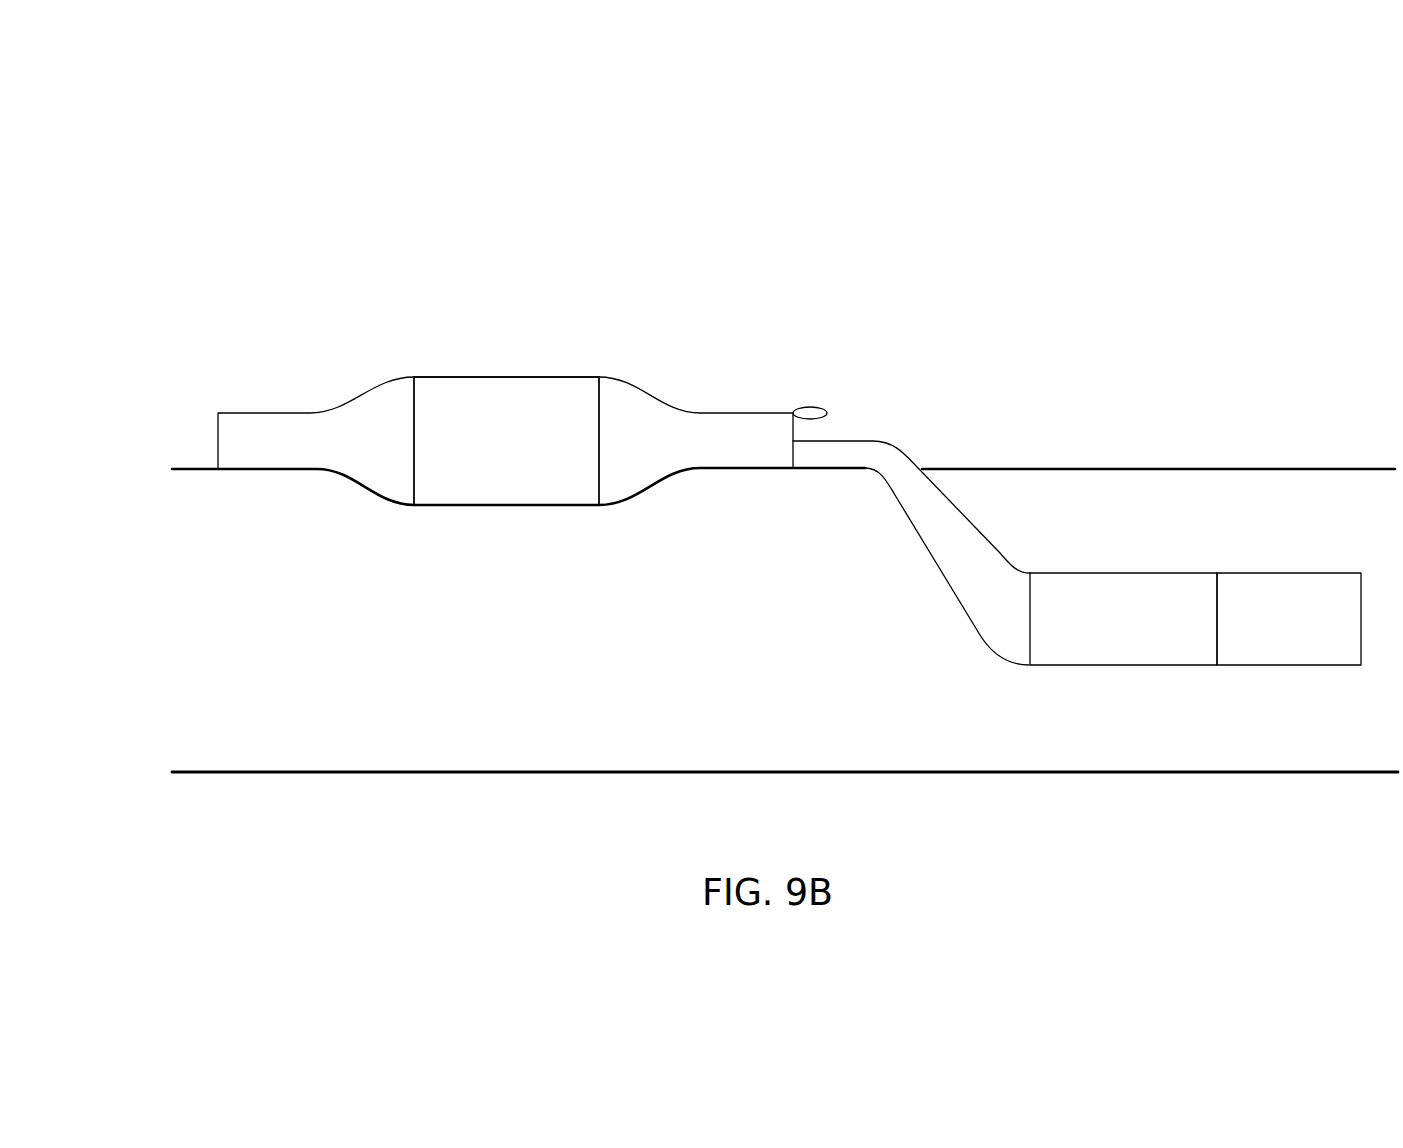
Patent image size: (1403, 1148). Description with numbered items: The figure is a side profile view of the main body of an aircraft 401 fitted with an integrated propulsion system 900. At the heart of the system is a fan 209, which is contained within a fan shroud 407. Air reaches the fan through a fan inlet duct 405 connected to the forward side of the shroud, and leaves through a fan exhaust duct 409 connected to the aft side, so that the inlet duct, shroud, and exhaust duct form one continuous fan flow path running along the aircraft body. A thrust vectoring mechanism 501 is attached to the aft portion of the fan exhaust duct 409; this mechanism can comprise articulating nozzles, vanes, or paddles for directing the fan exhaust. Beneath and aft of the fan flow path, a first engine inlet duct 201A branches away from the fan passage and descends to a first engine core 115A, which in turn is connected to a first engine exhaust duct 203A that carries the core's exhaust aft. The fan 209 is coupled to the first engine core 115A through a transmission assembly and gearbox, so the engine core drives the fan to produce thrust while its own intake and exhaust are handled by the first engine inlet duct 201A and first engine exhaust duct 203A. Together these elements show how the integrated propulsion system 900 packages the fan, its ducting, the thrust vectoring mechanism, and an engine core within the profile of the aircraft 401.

The integrated propulsion system 900 is at (333, 155).
The fan inlet duct 405 is at (310, 412).
The fan shroud 407 is at (503, 376).
The fan 209 is at (506, 441).
The fan exhaust duct 409 is at (733, 412).
The thrust vectoring mechanism 501 is at (810, 407).
The first engine inlet duct 201A is at (932, 530).
The first engine core 115A is at (1123, 619).
The first engine exhaust duct 203A is at (1289, 619).
The aircraft 401 is at (1350, 773).